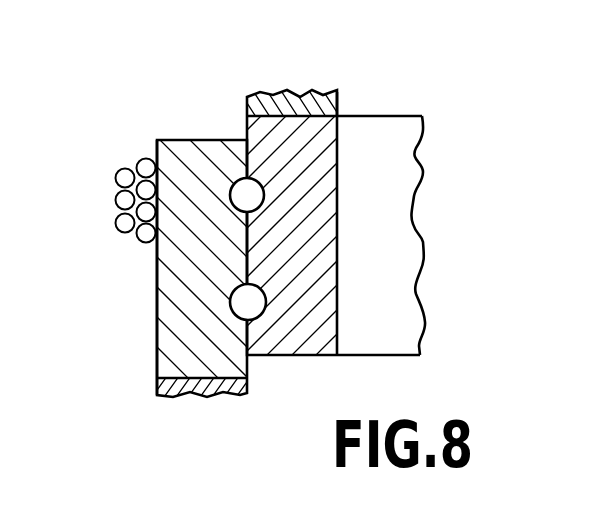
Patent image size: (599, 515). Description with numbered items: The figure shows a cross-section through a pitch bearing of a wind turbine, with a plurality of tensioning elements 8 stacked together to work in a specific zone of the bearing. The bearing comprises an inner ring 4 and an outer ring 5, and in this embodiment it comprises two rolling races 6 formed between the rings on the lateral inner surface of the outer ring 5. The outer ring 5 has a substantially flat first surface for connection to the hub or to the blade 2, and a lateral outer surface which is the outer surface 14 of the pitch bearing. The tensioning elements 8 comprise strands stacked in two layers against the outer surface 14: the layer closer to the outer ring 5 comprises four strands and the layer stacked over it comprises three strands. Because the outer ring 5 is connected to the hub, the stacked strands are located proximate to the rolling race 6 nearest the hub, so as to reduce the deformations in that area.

The blade 2 is at (308, 95).
The inner ring 4 is at (312, 285).
The outer ring 5 is at (192, 324).
The rolling race 6 is at (265, 193).
The tensioning element 8 is at (145, 165).
The outer surface 14 is at (157, 283).